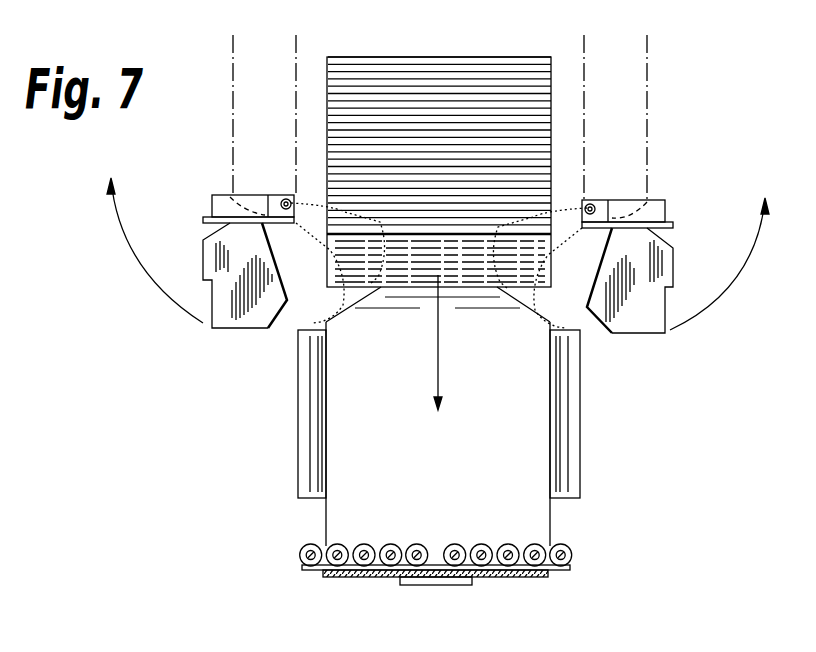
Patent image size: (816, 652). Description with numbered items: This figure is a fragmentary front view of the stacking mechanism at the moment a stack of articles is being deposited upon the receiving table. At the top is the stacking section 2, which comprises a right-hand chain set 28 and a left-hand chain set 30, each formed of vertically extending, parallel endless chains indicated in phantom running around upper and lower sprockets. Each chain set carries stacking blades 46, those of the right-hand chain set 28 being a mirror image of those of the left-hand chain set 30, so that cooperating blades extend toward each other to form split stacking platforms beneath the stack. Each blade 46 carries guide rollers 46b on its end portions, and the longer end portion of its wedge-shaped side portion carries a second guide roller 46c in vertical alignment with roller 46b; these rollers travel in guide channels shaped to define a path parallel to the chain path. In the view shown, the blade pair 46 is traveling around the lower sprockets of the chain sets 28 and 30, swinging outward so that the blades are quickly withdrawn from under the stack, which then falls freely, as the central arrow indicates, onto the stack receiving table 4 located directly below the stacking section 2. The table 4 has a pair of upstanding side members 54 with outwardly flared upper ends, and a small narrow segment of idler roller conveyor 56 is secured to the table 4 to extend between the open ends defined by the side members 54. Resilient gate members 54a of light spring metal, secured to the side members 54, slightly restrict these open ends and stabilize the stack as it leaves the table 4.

The stacking section 2 is at (446, 41).
The stack receiving table 4 is at (444, 502).
The right-hand chain set 28 is at (650, 56).
The left-hand chain set 30 is at (233, 50).
The stacking blade 46 is at (252, 326).
The guide roller 46b is at (285, 198).
The second guide roller 46c is at (230, 197).
The upstanding side member 54 is at (550, 520).
The resilient gate member 54a is at (298, 437).
The idler roller conveyor 56 is at (302, 565).